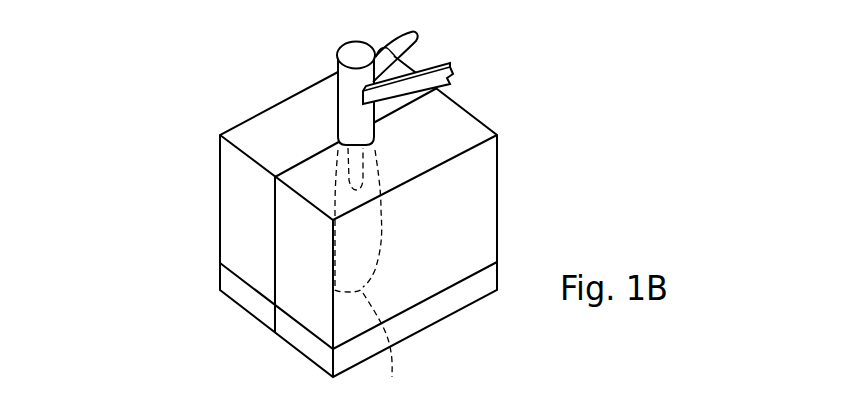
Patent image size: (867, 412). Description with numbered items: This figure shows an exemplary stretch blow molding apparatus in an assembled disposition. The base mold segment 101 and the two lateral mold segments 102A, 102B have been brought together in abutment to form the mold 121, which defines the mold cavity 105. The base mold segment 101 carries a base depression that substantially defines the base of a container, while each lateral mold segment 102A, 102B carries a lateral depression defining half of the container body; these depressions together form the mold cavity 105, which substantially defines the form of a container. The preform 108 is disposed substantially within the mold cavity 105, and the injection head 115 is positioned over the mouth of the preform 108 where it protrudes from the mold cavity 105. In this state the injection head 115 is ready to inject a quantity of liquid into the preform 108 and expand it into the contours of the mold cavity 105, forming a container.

The base mold segment 101 is at (463, 297).
The lateral mold segment 102A is at (228, 217).
The lateral mold segment 102B is at (485, 230).
The mold cavity 105 is at (385, 345).
The preform 108 is at (378, 173).
The injection head 115 is at (337, 71).
The mold 121 is at (318, 216).